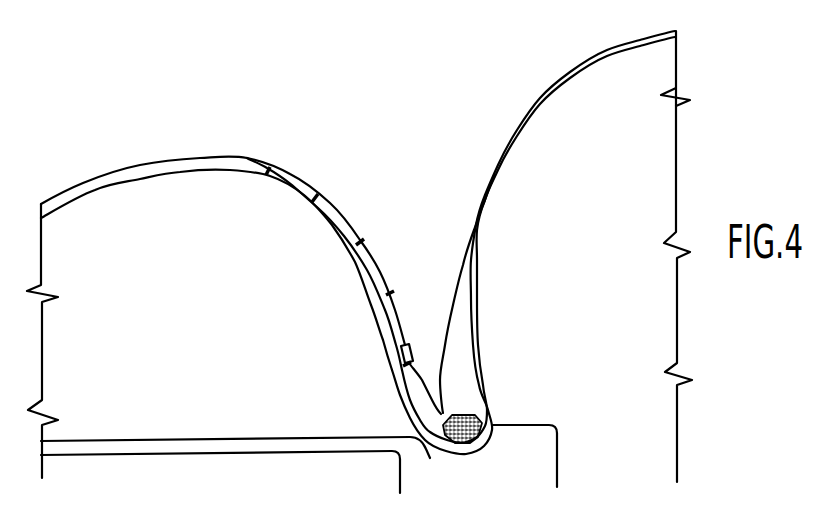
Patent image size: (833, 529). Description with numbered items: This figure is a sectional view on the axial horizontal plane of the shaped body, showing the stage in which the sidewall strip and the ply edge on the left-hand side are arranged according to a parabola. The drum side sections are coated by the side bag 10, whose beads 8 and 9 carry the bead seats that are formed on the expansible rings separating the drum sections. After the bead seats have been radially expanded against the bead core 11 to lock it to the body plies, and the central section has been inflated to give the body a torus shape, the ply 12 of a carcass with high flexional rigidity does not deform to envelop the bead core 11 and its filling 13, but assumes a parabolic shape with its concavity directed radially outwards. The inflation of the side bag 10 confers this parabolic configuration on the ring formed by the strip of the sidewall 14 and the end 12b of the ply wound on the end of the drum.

The bead 8 is at (510, 467).
The bead 9 is at (417, 478).
The side bag 10 is at (118, 173).
The bead core 11 is at (463, 413).
The body ply 12 is at (510, 143).
The end of the ply 12b is at (447, 488).
The filling 13 is at (450, 333).
The strip of the sidewall 14 is at (328, 217).